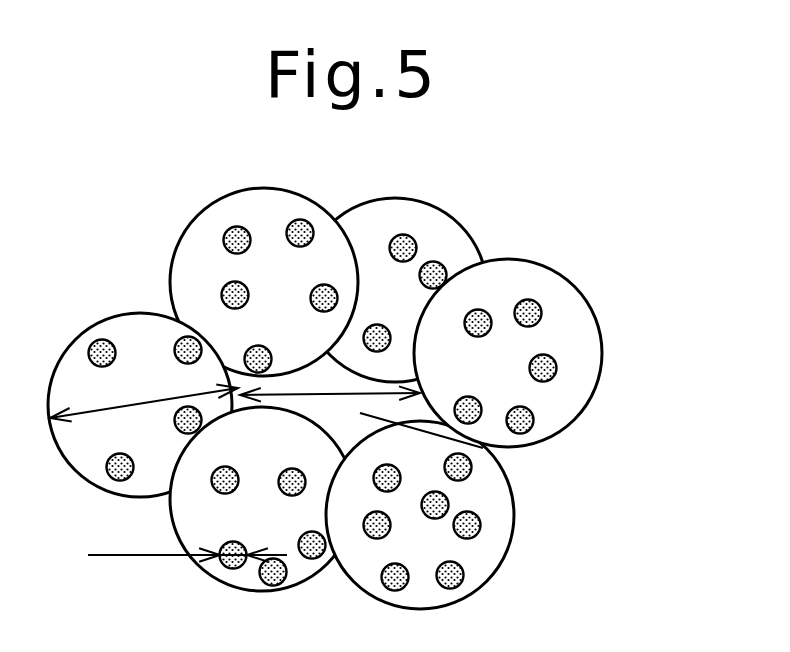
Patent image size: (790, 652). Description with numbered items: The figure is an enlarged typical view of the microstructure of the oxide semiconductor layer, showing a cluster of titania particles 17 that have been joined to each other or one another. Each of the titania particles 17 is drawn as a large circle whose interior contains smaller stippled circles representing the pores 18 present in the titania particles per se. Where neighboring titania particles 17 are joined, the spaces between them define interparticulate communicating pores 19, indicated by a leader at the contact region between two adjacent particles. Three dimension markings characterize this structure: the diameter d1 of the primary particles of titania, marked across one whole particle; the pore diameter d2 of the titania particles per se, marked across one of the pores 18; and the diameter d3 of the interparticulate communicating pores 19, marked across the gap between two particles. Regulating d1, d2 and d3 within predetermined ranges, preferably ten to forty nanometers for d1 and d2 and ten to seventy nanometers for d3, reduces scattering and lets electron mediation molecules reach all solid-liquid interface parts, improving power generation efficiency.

The titania particles 17 is at (582, 332).
The pores 18 is at (540, 305).
The interparticulate communicating pores 19 is at (483, 448).
The diameter of primary particles of titania d1 is at (144, 395).
The pore diameter of titania particles d2 is at (187, 542).
The diameter of interparticulate communicating pores d3 is at (330, 382).